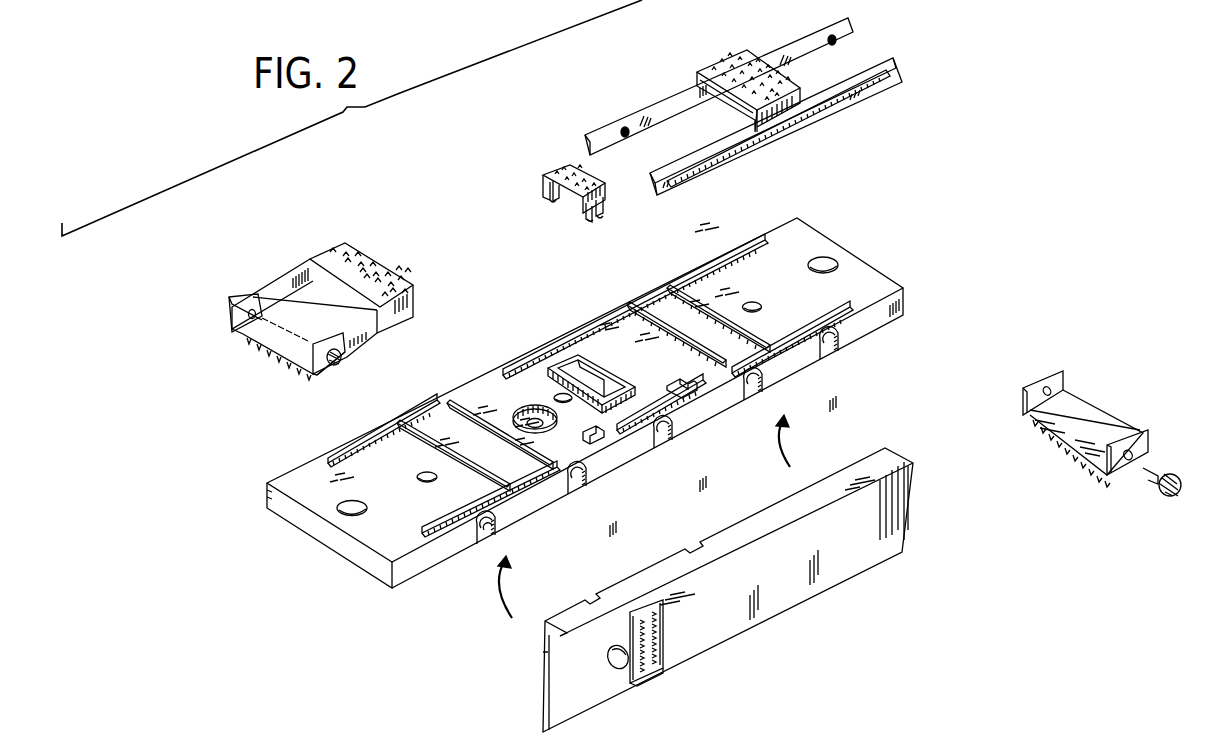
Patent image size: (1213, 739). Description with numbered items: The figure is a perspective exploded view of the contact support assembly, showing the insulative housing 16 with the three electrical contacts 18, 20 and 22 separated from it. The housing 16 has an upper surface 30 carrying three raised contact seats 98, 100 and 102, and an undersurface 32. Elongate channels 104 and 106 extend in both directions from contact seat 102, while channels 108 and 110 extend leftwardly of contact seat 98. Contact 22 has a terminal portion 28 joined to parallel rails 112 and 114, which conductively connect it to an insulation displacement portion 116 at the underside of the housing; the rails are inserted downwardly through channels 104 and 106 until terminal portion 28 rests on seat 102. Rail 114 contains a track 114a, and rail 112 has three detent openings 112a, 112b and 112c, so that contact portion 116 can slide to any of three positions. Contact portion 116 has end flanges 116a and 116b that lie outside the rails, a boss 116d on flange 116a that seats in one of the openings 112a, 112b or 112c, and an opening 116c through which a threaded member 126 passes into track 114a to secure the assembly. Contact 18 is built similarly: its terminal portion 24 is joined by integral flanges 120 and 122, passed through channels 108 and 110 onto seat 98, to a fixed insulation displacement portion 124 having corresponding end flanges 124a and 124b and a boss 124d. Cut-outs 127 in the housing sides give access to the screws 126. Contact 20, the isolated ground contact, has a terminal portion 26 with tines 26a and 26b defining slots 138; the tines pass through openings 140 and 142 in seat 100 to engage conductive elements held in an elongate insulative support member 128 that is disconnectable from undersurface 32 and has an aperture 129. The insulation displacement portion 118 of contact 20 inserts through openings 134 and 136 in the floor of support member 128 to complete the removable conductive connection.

The housing 16 is at (857, 267).
The electrical contact 18 is at (278, 241).
The contact 20 is at (516, 170).
The contact 22 is at (660, 75).
The terminal portion 24 is at (350, 256).
The terminal portion 26 is at (567, 165).
The tine 26a is at (543, 195).
The tine 26b is at (560, 200).
The terminal portion 28 is at (735, 62).
The upper surface 30 is at (357, 515).
The undersurface 32 is at (305, 533).
The contact seat 98 is at (443, 435).
The contact seat 100 is at (575, 368).
The contact seat 102 is at (673, 310).
The elongate channel 104 is at (728, 257).
The elongate channel 106 is at (847, 313).
The channel 108 is at (367, 440).
The channel 110 is at (435, 537).
The rail 112 is at (806, 33).
The through opening 112a is at (624, 136).
The through opening 112b is at (718, 88).
The through opening 112c is at (832, 42).
The rail 114 is at (890, 88).
The track 114a is at (812, 113).
The insulation displacement portion 116 is at (1097, 425).
The end flange 116a is at (1053, 372).
The end flange 116b is at (1143, 443).
The opening 116c is at (1120, 480).
The boss 116d is at (1065, 385).
The insulation displacement portion 118 is at (642, 680).
The integral flange 120 is at (287, 281).
The integral flange 122 is at (371, 342).
The insulation displacement portion 124 is at (283, 343).
The end flange 124a is at (238, 300).
The end flange 124b is at (328, 373).
The boss 124d is at (235, 330).
The threaded member 126 is at (338, 361).
The cut-out 127 is at (663, 433).
The insulative support member 128 is at (795, 592).
The aperture 129 is at (620, 643).
The opening 134 is at (663, 603).
The opening 136 is at (663, 665).
The slot 138 is at (553, 202).
The opening 140 is at (577, 370).
The opening 142 is at (613, 380).